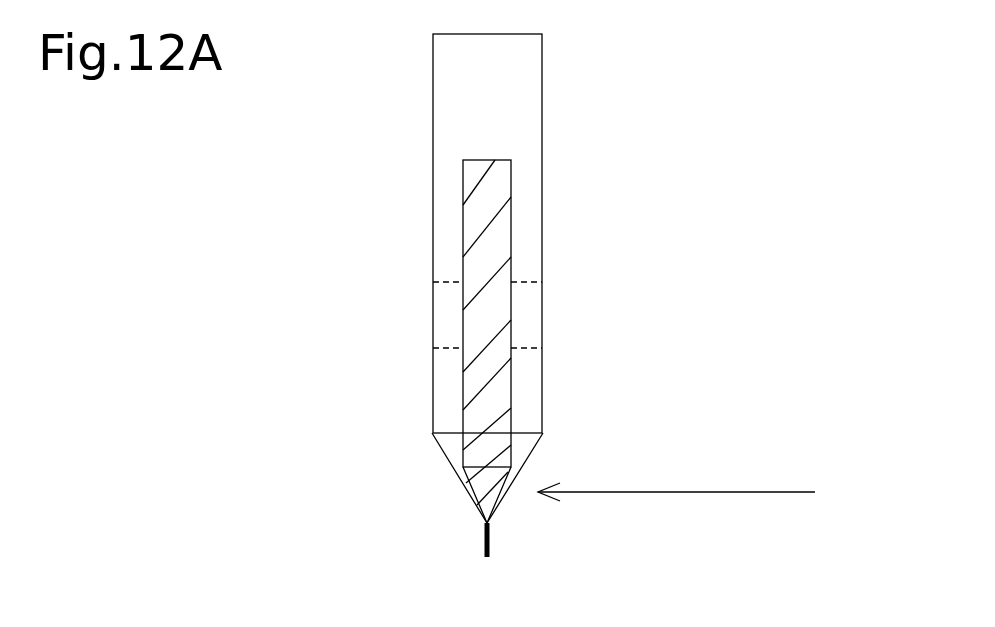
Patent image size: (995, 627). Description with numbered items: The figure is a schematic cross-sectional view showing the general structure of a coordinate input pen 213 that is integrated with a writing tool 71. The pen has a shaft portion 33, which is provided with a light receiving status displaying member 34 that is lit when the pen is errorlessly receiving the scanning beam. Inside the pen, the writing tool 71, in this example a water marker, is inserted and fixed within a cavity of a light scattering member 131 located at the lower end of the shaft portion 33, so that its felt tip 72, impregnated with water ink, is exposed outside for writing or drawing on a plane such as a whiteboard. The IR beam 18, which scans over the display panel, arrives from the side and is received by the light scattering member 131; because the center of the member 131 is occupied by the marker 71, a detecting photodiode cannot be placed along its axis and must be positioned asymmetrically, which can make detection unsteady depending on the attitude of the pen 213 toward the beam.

The coordinate input pen 213 is at (378, 176).
The shaft portion 33 is at (542, 71).
The light receiving status displaying member 34 is at (542, 314).
The writing tool 71 is at (511, 182).
The felt tip 72 is at (492, 542).
The light scattering member 131 is at (445, 469).
The IR beam 18 is at (677, 492).